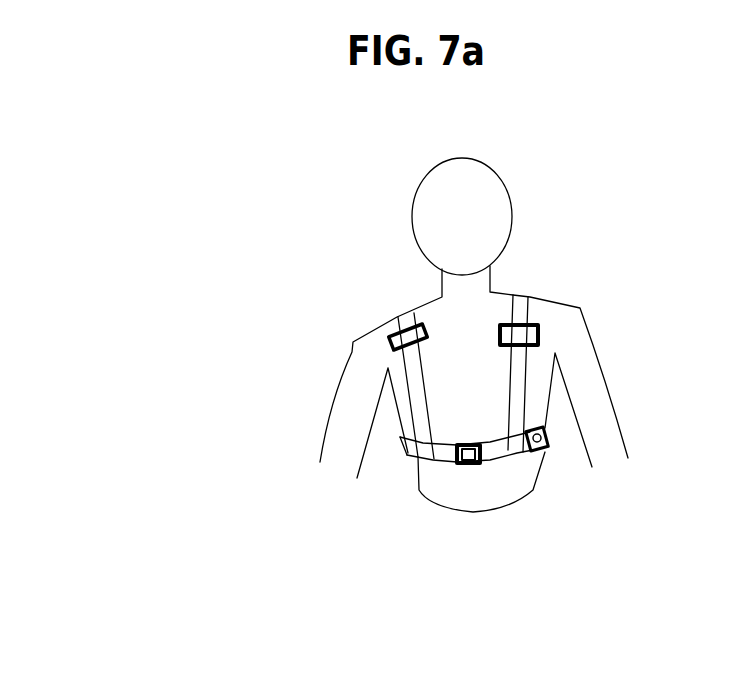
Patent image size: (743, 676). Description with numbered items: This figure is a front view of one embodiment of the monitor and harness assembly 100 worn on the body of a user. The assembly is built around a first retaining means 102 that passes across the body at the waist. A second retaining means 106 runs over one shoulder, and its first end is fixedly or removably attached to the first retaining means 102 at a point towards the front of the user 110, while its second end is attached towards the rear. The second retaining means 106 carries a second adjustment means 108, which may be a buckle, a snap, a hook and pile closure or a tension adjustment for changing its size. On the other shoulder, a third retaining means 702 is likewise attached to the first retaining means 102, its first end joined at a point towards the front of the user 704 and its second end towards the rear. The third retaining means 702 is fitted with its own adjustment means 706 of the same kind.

The monitor and harness assembly 100 is at (240, 179).
The first retaining means 102 is at (415, 455).
The second retaining means 106 is at (403, 318).
The second adjustment means 108 is at (387, 343).
The first end towards the front of the user 110 is at (433, 452).
The third retaining means 702 is at (520, 305).
The first end towards the front of the user 704 is at (533, 457).
The adjustment means 706 is at (543, 333).